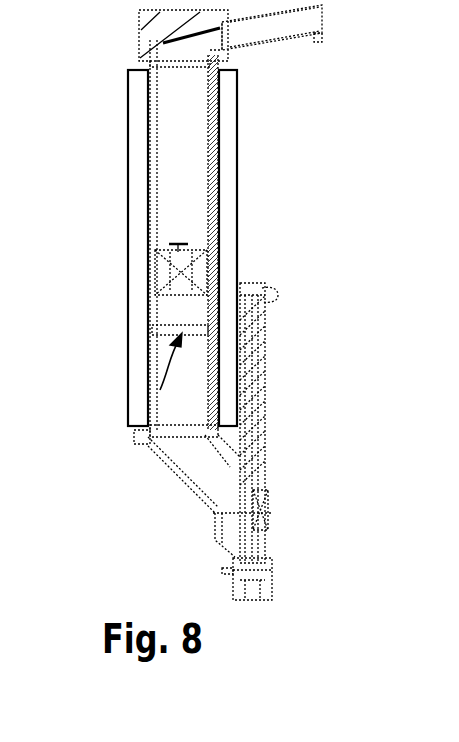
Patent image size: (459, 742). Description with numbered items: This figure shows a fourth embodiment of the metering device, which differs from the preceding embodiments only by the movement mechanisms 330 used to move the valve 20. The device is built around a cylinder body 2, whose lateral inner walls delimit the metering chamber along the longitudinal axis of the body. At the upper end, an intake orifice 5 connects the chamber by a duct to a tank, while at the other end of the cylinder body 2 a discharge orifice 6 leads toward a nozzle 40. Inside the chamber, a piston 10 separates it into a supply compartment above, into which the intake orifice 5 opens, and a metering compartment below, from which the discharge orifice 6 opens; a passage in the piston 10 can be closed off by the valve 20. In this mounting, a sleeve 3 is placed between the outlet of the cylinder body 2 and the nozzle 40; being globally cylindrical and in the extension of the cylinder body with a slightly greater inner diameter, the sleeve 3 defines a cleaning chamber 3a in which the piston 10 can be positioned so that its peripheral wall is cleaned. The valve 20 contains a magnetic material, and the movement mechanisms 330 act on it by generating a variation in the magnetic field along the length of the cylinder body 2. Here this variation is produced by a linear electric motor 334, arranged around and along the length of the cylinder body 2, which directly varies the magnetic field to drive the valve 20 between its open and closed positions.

The movement mechanisms 330 is at (187, 225).
The linear electric motor 334 is at (138, 187).
The cylinder body 2 is at (208, 160).
The intake orifice 5 is at (228, 38).
The piston 10 is at (200, 278).
The valve 20 is at (178, 244).
The discharge orifice 6 is at (158, 390).
The cleaning chamber 3a is at (205, 382).
The sleeve 3 is at (148, 402).
The nozzle 40 is at (304, 543).